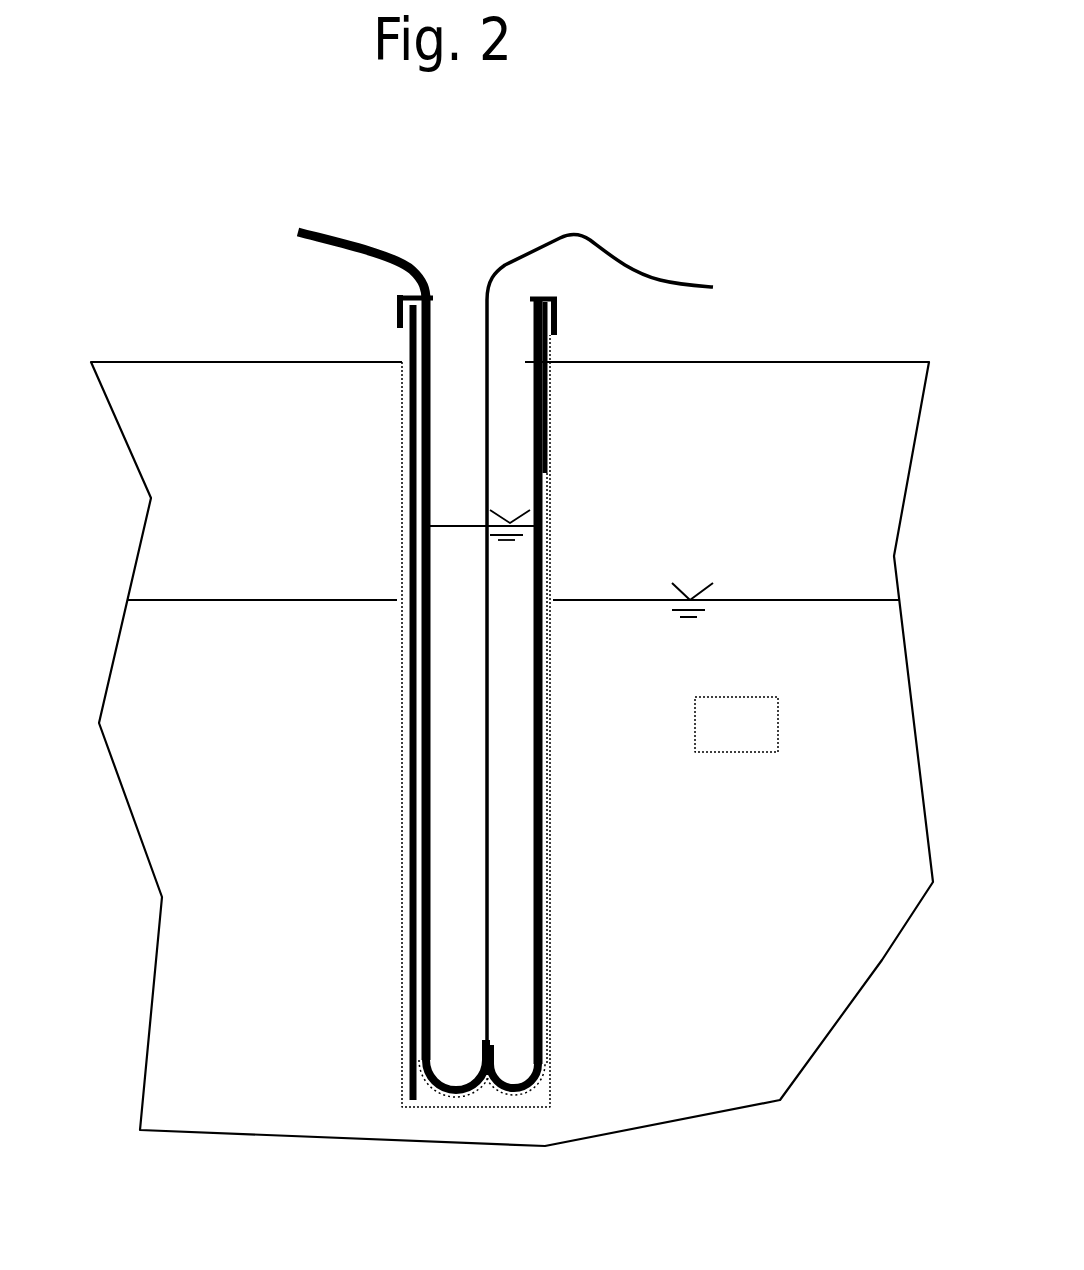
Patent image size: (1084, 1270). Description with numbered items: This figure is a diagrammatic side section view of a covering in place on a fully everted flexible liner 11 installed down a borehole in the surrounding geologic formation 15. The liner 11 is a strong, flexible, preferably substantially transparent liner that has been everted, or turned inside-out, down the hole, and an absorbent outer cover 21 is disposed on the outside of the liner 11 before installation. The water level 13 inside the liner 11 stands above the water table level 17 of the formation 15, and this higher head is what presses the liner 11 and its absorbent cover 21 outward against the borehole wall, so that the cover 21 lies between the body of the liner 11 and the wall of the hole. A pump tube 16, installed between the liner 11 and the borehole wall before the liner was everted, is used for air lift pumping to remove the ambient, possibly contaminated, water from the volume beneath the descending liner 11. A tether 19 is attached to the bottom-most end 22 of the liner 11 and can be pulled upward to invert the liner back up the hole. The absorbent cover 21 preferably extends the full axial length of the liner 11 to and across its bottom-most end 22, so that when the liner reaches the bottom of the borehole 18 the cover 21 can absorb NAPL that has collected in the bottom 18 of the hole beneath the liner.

The flexible liner 11 is at (545, 485).
The water level 13 is at (442, 528).
The geologic formation 15 is at (512, 754).
The pump tube 16 is at (362, 633).
The water table level 17 is at (783, 600).
The bottom of the borehole 18 is at (550, 1108).
The tether 19 is at (488, 978).
The absorbent outer cover 21 is at (543, 802).
The bottom-most end 22 is at (483, 1097).